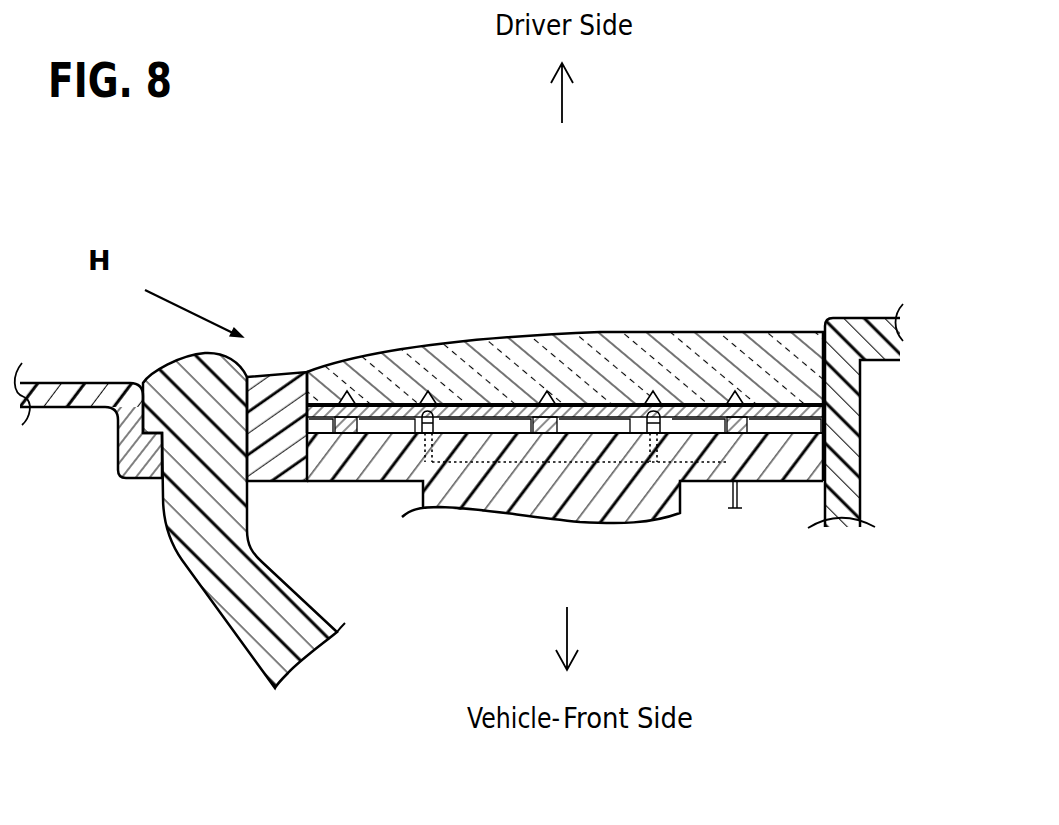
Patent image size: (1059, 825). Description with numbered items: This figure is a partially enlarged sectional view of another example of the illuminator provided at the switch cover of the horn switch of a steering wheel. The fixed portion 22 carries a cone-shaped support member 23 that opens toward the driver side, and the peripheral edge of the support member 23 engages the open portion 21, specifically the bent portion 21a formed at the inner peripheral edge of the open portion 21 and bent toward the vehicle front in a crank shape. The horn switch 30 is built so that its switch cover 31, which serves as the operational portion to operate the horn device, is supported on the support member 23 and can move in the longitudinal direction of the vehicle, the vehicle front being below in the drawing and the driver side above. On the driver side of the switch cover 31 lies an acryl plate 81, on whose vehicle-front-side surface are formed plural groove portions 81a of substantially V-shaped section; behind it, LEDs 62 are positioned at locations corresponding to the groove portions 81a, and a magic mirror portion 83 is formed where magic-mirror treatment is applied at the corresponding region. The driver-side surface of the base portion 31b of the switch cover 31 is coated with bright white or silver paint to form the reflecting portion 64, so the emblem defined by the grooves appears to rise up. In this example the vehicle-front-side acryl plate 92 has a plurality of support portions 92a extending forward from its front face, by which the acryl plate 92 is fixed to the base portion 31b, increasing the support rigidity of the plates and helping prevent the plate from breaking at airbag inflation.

The open portion 21 is at (68, 408).
The bent portion 21a is at (137, 474).
The fixed portion 22 is at (816, 237).
The support member 23 is at (247, 617).
The horn switch 30 is at (481, 247).
The switch cover 31 is at (287, 359).
The base portion 31b is at (362, 483).
The LED 62 is at (437, 420).
The reflecting portion 64 is at (697, 412).
The acryl plate 81 is at (598, 333).
The groove portion 81a is at (527, 400).
The magic mirror portion 83 is at (343, 402).
The vehicle-front-side acryl plate 92 is at (793, 413).
The support portion 92a is at (340, 427).